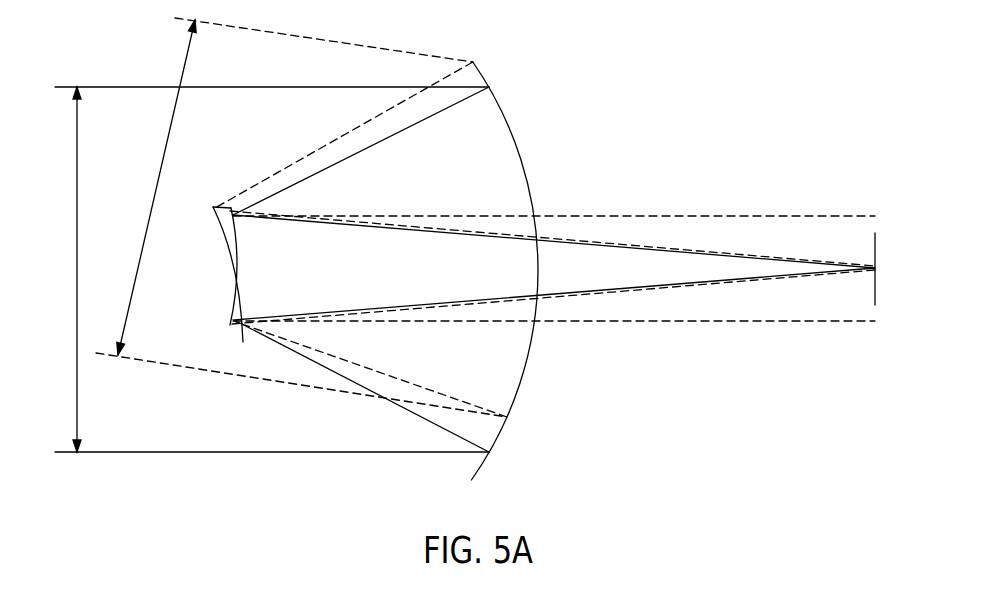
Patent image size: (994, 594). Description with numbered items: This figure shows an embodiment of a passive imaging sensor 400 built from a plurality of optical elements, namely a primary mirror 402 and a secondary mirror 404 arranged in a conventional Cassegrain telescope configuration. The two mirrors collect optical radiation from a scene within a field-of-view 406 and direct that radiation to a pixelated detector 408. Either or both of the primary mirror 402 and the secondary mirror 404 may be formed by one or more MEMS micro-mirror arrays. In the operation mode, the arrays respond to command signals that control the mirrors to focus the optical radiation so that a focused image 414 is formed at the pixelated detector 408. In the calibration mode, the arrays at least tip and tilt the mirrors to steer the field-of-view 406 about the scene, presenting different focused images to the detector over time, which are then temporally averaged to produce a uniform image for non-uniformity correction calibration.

The passive imaging sensor 400 is at (781, 38).
The primary mirror 402 is at (518, 150).
The secondary mirror 404 is at (233, 270).
The field-of-view 406 is at (77, 266).
The pixelated detector 408 is at (878, 250).
The focused image 414 is at (778, 260).